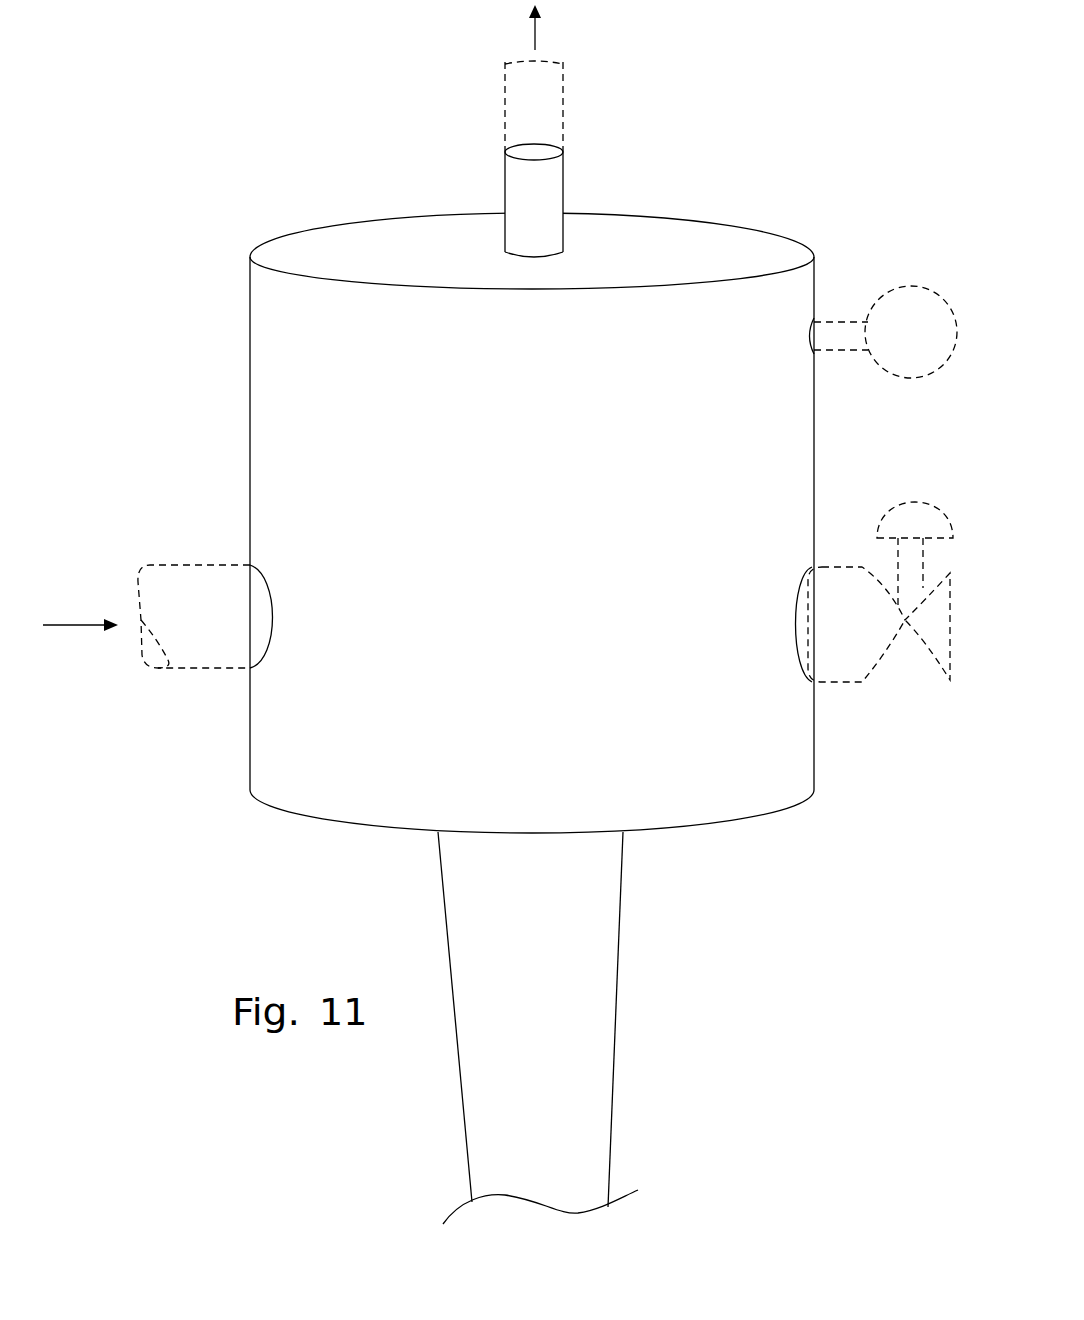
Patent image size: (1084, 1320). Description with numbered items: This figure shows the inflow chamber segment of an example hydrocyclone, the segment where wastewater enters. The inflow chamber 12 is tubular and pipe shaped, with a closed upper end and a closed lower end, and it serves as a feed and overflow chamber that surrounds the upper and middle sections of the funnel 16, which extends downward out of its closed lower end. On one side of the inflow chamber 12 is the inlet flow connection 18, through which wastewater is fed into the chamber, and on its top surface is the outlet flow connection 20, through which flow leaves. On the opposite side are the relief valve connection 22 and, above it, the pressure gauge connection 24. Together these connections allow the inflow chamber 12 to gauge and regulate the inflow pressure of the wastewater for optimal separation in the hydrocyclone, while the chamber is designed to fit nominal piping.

The inflow chamber 12 is at (735, 800).
The funnel 16 is at (578, 1092).
The inlet flow connection 18 is at (200, 668).
The outlet flow connection 20 is at (545, 233).
The relief valve connection 22 is at (815, 568).
The pressure gauge connection 24 is at (815, 322).